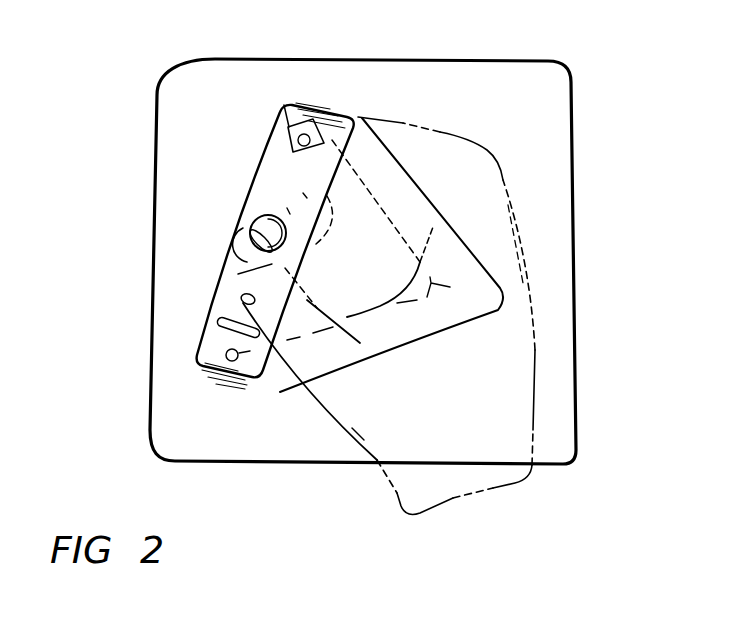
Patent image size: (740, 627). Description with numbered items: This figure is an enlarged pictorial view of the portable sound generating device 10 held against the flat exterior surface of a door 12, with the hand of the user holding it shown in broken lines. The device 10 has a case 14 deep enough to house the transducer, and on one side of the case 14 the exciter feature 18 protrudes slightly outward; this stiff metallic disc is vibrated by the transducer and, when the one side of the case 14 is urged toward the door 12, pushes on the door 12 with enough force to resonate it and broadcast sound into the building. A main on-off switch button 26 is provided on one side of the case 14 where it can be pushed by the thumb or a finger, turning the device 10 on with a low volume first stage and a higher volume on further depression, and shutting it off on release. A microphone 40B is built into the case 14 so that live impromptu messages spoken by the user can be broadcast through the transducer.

The portable sound generating device 10 is at (243, 197).
The door 12 is at (520, 124).
The case 14 is at (280, 392).
The exciter feature 18 is at (305, 197).
The main on-off switch button 26 is at (248, 214).
The microphone 40B is at (284, 105).